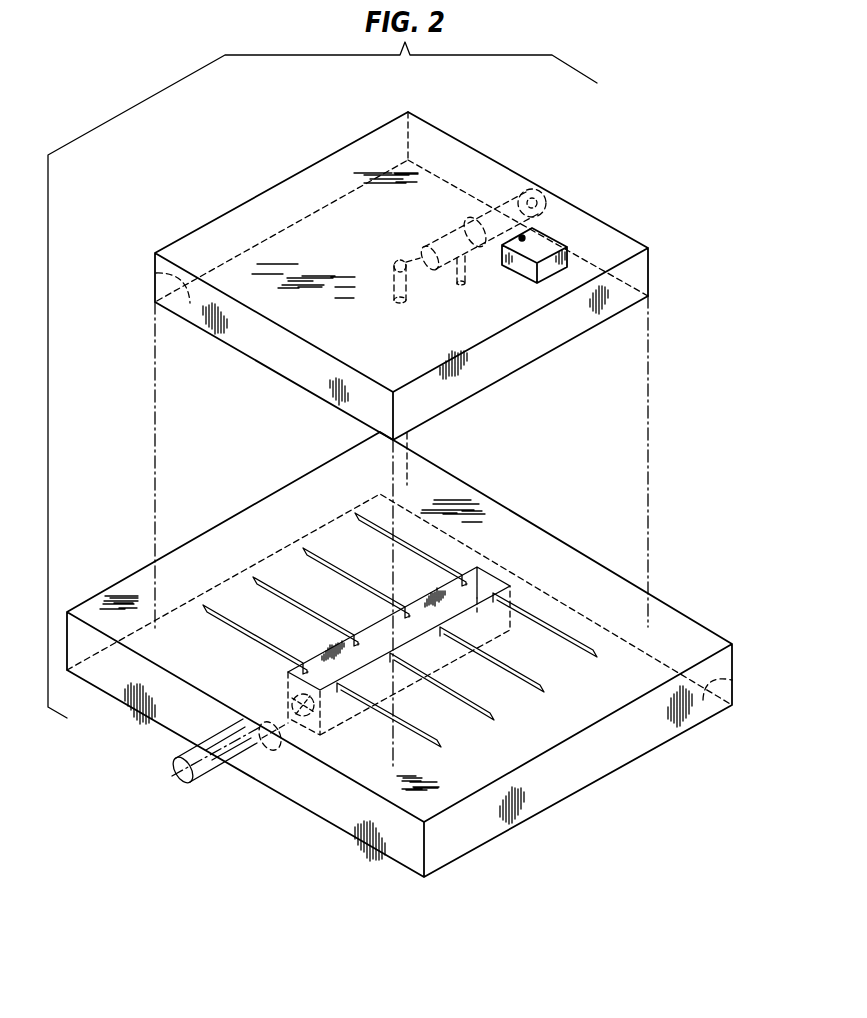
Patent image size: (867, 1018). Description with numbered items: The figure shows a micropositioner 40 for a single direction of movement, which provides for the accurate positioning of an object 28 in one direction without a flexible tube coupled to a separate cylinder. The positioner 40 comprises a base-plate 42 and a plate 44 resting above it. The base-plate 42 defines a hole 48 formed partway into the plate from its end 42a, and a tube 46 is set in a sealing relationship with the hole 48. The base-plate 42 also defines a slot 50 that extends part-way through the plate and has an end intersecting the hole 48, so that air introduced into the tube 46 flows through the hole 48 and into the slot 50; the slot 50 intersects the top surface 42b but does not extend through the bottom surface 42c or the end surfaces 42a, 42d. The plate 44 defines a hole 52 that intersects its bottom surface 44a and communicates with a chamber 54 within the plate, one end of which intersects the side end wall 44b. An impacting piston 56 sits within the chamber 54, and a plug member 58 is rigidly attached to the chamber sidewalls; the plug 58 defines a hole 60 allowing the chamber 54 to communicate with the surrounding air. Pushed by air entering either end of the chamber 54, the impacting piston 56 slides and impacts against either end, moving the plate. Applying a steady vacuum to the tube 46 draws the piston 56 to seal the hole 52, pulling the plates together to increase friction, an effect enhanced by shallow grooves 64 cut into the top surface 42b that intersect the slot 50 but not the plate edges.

The micropositioner 40 is at (137, 186).
The plate 44 is at (622, 232).
The bottom surface 44a is at (157, 274).
The side end wall 44b is at (478, 172).
The plug member 58 is at (480, 204).
The hole 60 is at (541, 196).
The chamber 54 is at (428, 238).
The hole 52 is at (428, 305).
The impacting piston 56 is at (460, 283).
The object 28 is at (545, 248).
The base-plate 42 is at (612, 577).
The end 42a is at (342, 813).
The top surface 42b is at (235, 680).
The bottom surface 42c is at (730, 678).
The end surface 42d is at (706, 643).
The slot 50 is at (490, 582).
The grooves 64 is at (208, 604).
The tube 46 is at (218, 772).
The hole 48 is at (267, 742).